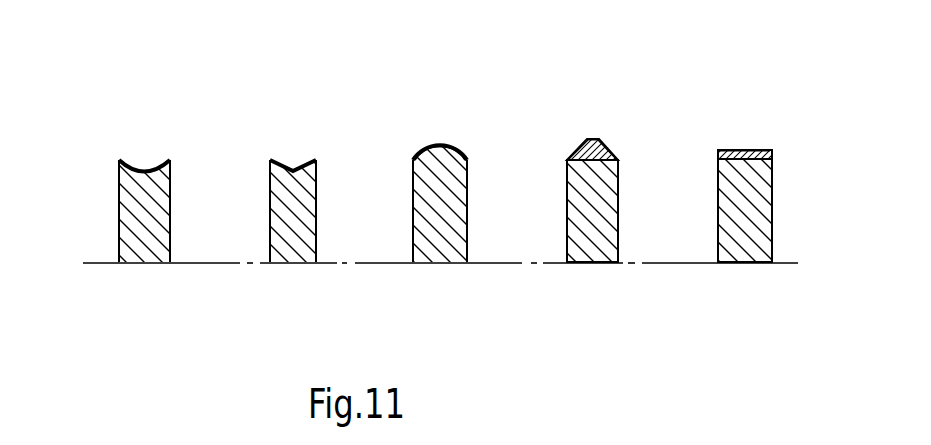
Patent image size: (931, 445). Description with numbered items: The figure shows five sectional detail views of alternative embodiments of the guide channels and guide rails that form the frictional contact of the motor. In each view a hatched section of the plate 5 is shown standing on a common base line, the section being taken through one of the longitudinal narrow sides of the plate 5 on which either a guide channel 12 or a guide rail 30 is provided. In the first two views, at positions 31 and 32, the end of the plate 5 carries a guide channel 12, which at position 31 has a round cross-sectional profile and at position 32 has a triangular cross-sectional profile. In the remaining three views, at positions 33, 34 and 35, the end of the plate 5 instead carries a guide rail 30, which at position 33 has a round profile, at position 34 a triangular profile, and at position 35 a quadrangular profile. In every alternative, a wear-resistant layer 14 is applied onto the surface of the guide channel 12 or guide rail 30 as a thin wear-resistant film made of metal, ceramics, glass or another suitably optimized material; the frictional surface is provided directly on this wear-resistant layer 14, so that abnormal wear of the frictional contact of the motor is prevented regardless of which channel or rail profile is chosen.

The plate 5 is at (118, 215).
The guide channel 12 is at (128, 138).
The wear-resistant layer 14 is at (152, 160).
The guide rail 30 is at (452, 144).
The position 31 is at (144, 249).
The position 32 is at (293, 248).
The position 33 is at (440, 247).
The position 34 is at (592, 236).
The position 35 is at (745, 239).